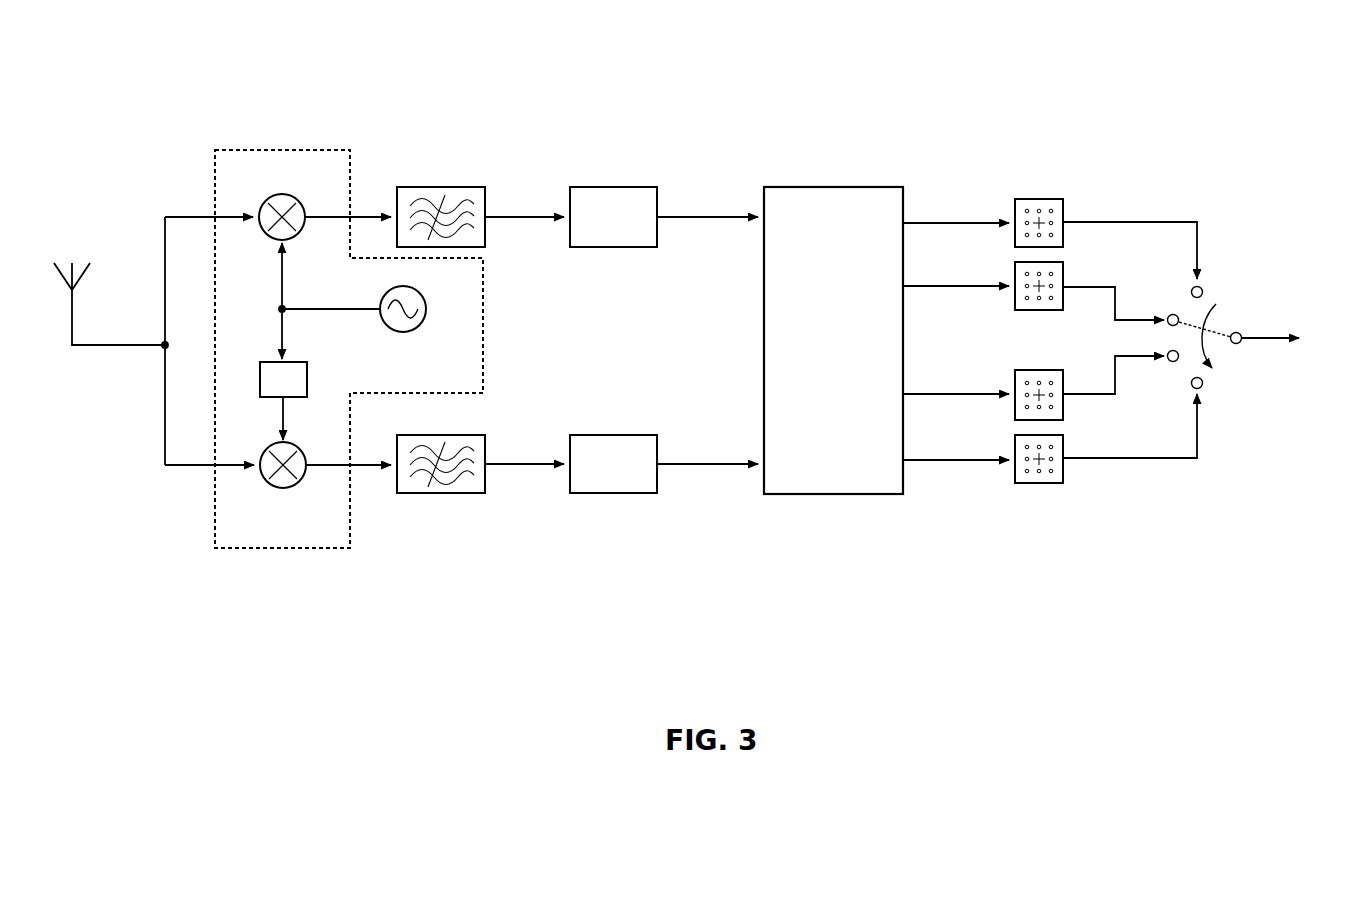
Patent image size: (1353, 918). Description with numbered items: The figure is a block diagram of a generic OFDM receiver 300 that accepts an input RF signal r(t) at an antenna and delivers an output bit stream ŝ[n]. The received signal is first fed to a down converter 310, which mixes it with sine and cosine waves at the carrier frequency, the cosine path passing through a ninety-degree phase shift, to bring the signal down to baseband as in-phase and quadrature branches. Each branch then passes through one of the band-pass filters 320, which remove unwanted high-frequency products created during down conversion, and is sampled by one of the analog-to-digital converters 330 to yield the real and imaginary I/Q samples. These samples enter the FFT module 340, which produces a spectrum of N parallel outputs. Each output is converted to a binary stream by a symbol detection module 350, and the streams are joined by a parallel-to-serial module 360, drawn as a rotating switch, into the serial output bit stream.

The OFDM receiver 300 is at (208, 41).
The down converter 310 is at (310, 548).
The band-pass filters 320 is at (429, 193).
The analog-to-digital converters 330 is at (600, 193).
The FFT module 340 is at (832, 193).
The symbol detection module 350 is at (1063, 248).
The parallel-to-serial module 360 is at (1238, 331).